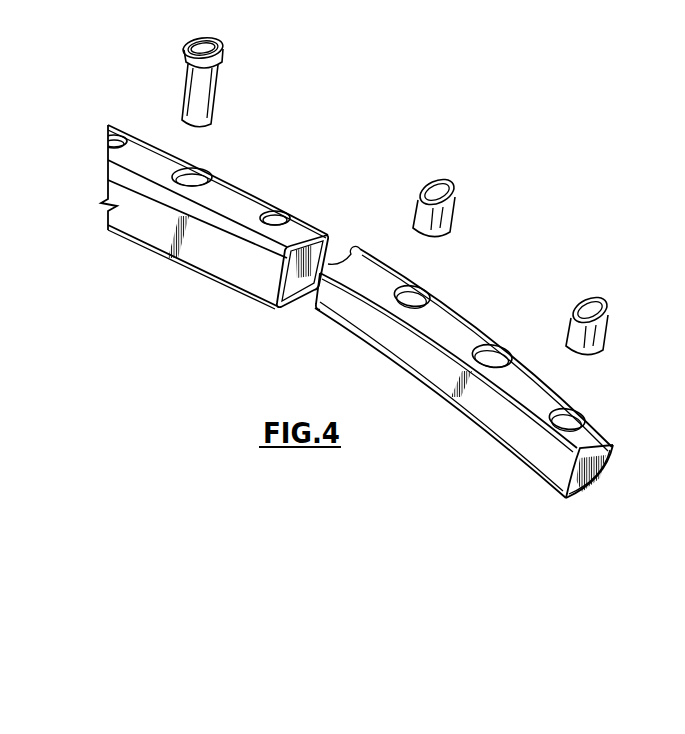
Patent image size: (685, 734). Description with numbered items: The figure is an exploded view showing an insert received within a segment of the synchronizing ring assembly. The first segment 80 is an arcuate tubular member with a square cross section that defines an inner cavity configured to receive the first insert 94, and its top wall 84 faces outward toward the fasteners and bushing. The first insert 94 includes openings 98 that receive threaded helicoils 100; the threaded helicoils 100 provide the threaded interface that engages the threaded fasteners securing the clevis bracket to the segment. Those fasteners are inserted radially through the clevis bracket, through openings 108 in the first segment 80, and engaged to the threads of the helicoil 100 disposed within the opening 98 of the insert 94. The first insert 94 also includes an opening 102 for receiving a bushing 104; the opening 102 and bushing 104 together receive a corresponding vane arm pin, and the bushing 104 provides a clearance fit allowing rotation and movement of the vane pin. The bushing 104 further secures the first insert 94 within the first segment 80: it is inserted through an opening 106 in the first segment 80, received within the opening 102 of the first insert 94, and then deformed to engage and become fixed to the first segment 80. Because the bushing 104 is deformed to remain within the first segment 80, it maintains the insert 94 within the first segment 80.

The first segment 80 is at (193, 243).
The top wall of rail segment 84 is at (239, 203).
The first insert 94 is at (422, 365).
The openings 98 is at (423, 288).
The threaded helicoils 100 is at (437, 277).
The opening 102 is at (500, 346).
The bushing 104 is at (213, 90).
The opening 106 is at (217, 166).
The openings 108 is at (294, 213).